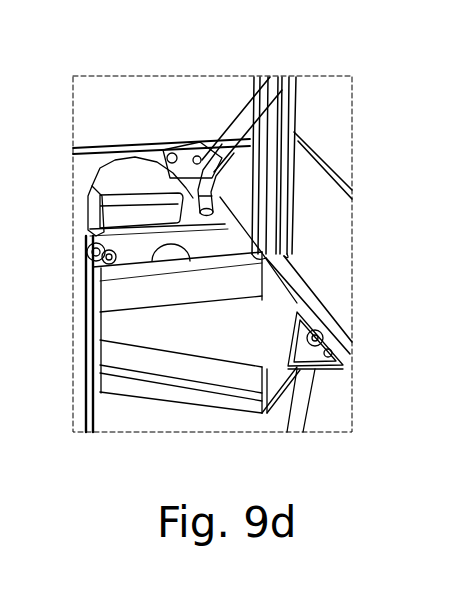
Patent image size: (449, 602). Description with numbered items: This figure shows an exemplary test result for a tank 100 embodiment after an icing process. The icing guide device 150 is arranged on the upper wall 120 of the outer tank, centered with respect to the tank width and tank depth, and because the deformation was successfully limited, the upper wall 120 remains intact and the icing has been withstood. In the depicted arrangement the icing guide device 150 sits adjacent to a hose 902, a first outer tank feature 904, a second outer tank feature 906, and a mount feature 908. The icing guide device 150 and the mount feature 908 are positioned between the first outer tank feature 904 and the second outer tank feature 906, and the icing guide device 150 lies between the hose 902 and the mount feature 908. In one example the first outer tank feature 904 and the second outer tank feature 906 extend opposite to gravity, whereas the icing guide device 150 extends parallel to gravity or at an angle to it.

The vehicle 100 is at (95, 127).
The hose 902 is at (262, 95).
The upper wall 120 is at (223, 240).
The second outer tank feature 906 is at (95, 197).
The mount feature 908 is at (92, 245).
The first outer tank feature 904 is at (90, 303).
The icing guide device 150 is at (170, 250).